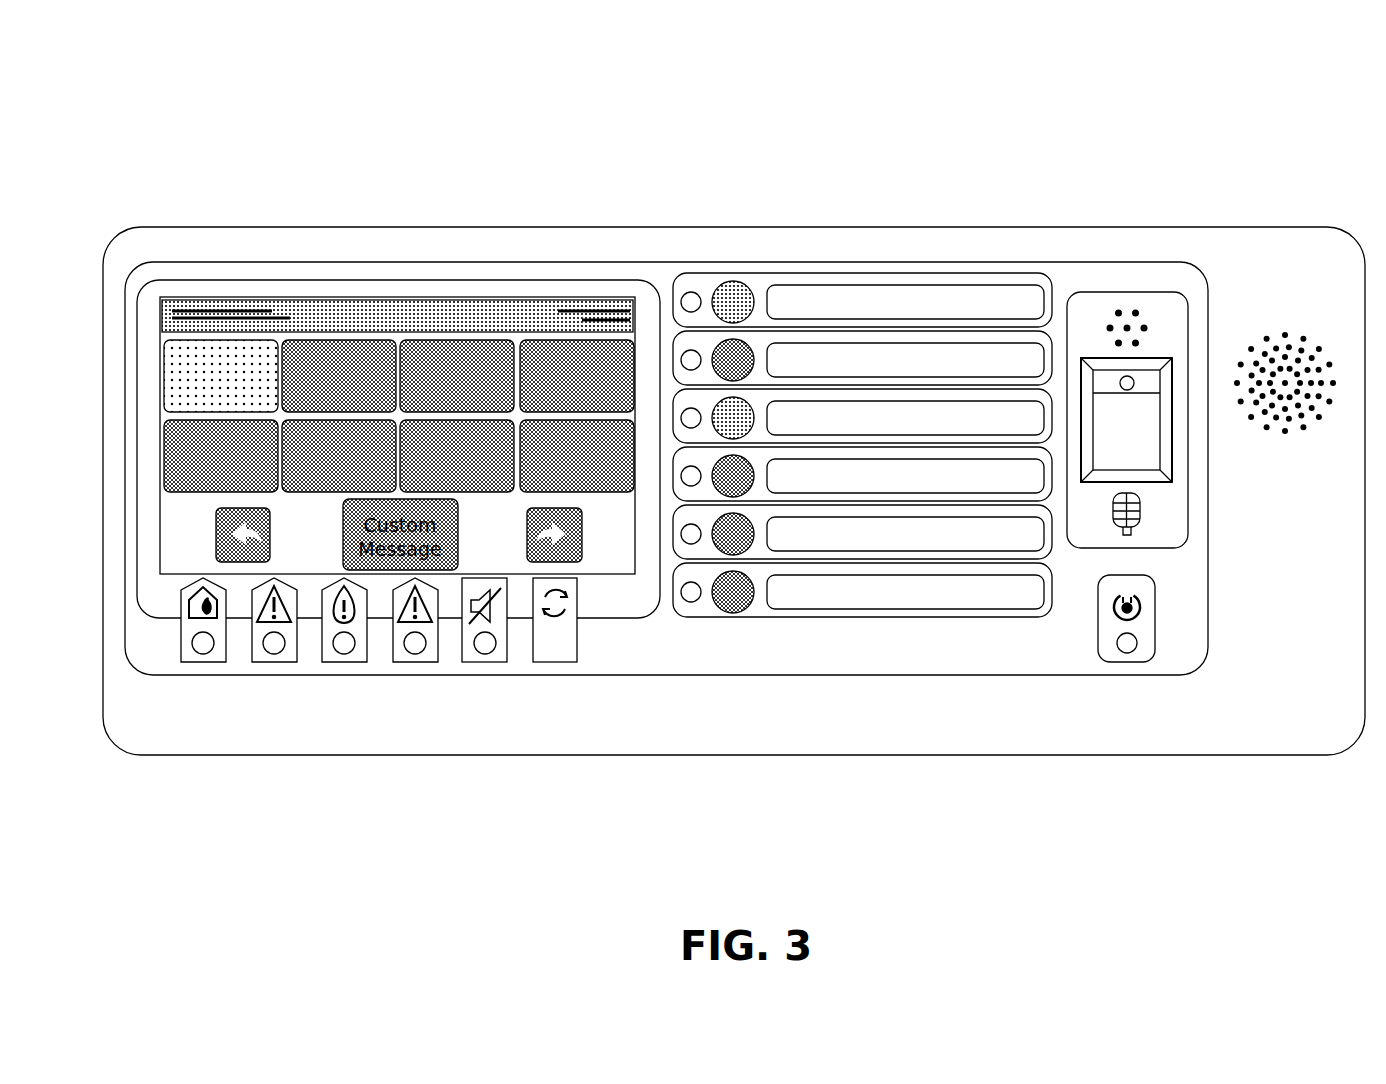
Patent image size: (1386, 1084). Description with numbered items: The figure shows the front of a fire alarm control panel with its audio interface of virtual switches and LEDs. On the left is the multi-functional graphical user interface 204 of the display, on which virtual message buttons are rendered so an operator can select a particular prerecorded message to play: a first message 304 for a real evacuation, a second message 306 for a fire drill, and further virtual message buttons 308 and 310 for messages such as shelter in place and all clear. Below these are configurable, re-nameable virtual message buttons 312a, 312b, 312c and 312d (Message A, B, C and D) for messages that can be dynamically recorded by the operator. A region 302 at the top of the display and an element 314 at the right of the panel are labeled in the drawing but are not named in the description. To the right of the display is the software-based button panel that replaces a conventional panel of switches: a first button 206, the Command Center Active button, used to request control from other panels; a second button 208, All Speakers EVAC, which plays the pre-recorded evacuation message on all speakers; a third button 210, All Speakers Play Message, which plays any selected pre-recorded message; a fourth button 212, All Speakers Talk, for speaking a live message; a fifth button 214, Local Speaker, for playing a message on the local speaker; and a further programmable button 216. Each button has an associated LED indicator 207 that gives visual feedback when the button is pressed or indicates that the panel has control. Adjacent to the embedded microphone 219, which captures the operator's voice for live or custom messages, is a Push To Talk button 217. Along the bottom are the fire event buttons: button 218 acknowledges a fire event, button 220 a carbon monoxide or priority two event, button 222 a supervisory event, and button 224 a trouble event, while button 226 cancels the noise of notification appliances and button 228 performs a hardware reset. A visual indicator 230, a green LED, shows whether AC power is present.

The graphical user interface 204 is at (177, 300).
The status bar 302 is at (217, 300).
The first message 304 is at (223, 340).
The second message 306 is at (344, 340).
The virtual message button 308 is at (459, 340).
The virtual message button 310 is at (578, 340).
The virtual message button 312a is at (224, 420).
The virtual message button 312b is at (341, 420).
The virtual message button 312c is at (460, 420).
The virtual message button 312d is at (578, 420).
The first button 206 is at (735, 281).
The LED indicator 207 is at (691, 292).
The second button 208 is at (748, 343).
The third button 210 is at (748, 403).
The fourth button 212 is at (750, 492).
The fifth button 214 is at (733, 556).
The button 216 is at (724, 609).
The Push To Talk button 217 is at (1125, 378).
The microphone 219 is at (1156, 332).
The fire event button 218 is at (203, 663).
The fire event button 220 is at (274, 663).
The fire event button 222 is at (344, 663).
The fire event button 224 is at (415, 663).
The fire event button 226 is at (485, 663).
The fire event button 228 is at (555, 663).
The visual indicator 230 is at (1122, 661).
The speaker 314 is at (1278, 316).